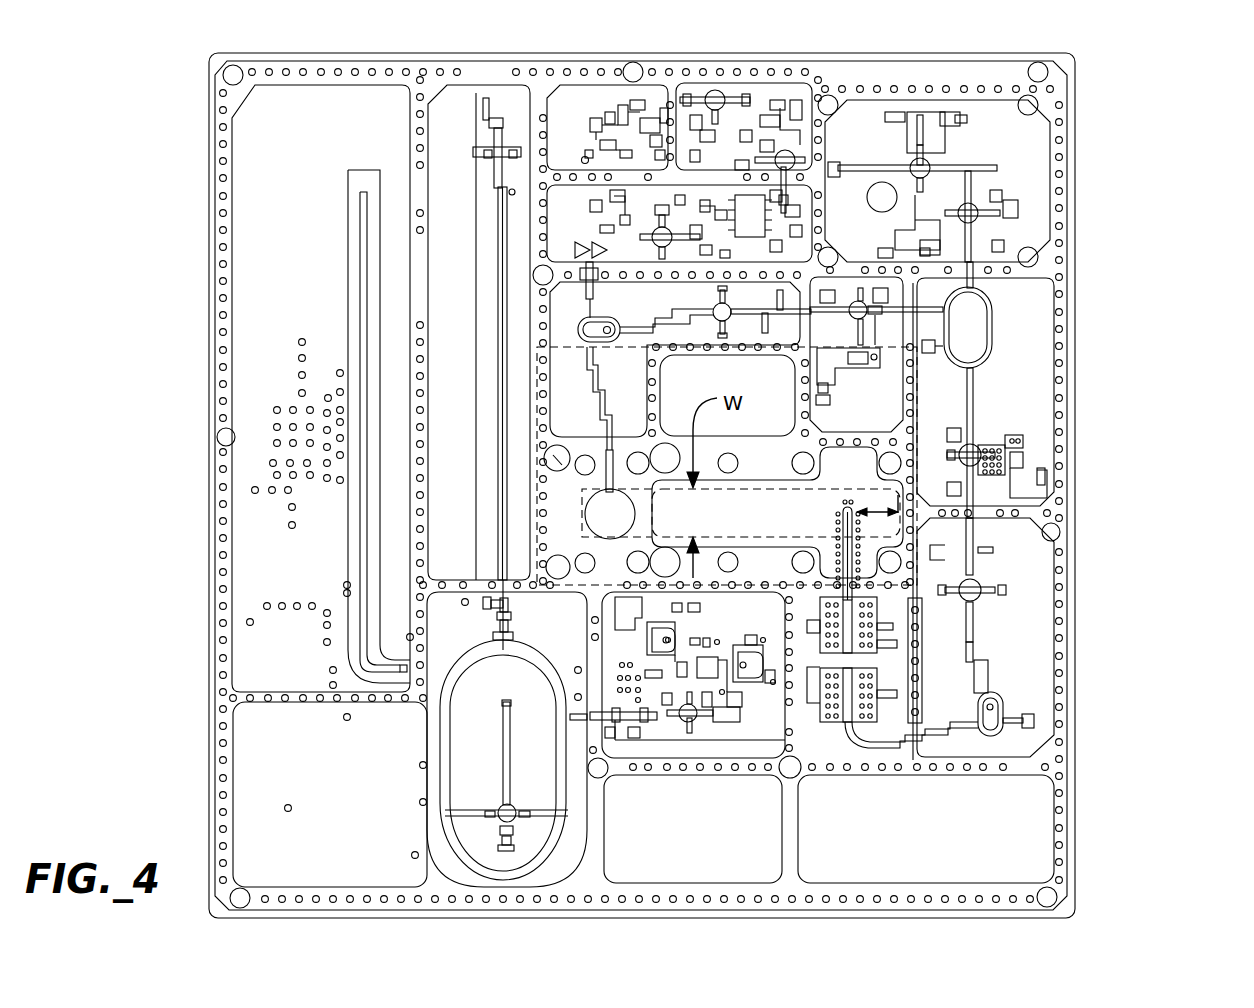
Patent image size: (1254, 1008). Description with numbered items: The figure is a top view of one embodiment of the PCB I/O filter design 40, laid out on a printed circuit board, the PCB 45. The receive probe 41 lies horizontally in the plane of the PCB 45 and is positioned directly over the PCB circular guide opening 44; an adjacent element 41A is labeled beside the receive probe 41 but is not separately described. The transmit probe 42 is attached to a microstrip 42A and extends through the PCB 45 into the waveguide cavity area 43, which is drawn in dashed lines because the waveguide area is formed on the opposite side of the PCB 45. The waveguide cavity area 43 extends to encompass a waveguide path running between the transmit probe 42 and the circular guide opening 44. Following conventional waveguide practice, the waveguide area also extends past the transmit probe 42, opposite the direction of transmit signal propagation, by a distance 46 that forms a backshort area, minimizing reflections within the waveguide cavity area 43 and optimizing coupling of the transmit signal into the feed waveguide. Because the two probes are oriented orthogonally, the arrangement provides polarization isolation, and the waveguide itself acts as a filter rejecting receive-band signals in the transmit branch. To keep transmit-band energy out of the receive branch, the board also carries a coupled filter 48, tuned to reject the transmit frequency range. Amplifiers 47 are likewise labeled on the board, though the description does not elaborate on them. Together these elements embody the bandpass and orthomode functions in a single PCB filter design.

The PCB I/O filter design 40 is at (568, 338).
The receive probe 41 is at (582, 497).
The RX probe section 41A is at (598, 448).
The transmit probe 42 is at (850, 527).
The microstrip 42A is at (840, 570).
The waveguide cavity area 43 is at (786, 488).
The PCB circular guide opening 44 is at (602, 540).
The PCB 45 is at (1082, 451).
The distance 46 is at (878, 510).
The amplifiers 47 is at (867, 703).
The coupled filter 48 is at (566, 402).